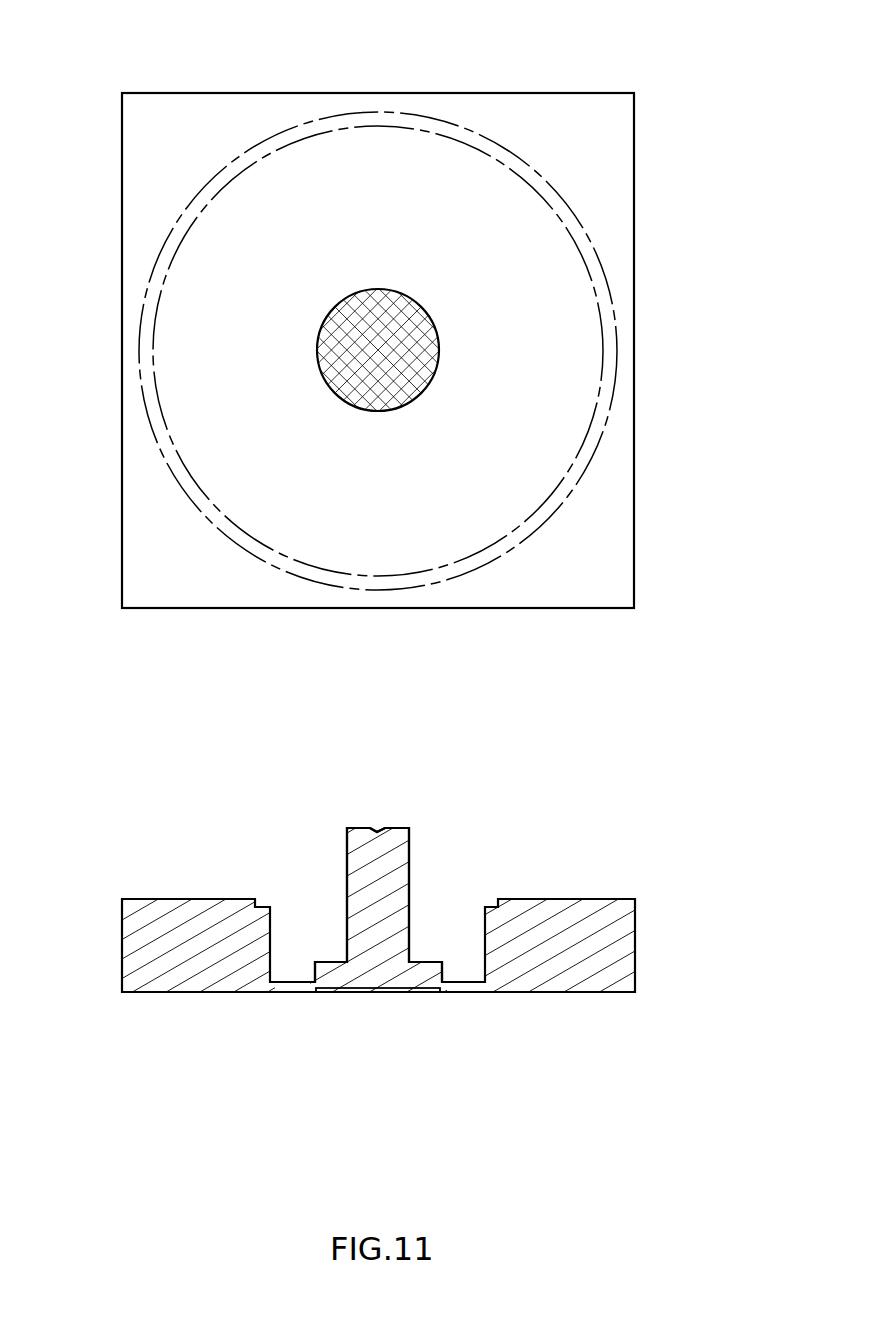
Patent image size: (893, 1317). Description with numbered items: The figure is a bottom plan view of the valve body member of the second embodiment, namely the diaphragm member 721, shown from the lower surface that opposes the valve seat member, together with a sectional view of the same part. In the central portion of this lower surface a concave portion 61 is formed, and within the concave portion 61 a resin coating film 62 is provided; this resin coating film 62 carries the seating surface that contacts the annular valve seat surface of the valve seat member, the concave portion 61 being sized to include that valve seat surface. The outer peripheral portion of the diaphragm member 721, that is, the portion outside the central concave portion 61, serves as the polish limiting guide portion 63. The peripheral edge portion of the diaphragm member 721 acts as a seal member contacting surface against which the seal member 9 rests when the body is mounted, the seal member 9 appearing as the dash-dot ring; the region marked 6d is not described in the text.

The diaphragm member 721 is at (635, 298).
The polish limiting guide portion 63 is at (324, 552).
The seal member 9 is at (165, 242).
The suction holding portion 6d is at (155, 414).
The resin coating film 62 is at (398, 313).
The concave portion 61 is at (398, 414).